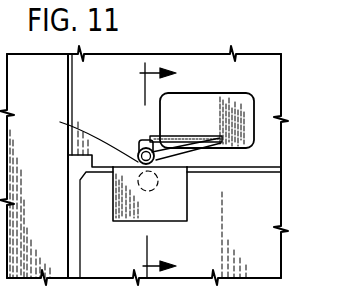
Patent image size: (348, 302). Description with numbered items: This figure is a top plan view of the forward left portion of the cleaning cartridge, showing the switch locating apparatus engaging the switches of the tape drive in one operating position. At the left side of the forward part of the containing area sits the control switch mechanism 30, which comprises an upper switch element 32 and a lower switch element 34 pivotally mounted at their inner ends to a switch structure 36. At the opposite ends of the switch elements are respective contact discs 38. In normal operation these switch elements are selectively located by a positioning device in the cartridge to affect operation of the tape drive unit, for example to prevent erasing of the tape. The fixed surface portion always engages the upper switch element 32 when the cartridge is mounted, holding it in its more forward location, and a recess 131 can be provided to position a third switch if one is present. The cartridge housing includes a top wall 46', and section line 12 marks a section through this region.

The section line 12- 12 is at (147, 169).
The control switch mechanism 30 is at (256, 90).
The upper switch element 32 is at (139, 148).
The lower switch element 34 is at (190, 153).
The switch structure 36 is at (244, 110).
The contact discs 38 is at (60, 122).
The recess 131 is at (188, 189).
The top wall 46' is at (280, 235).